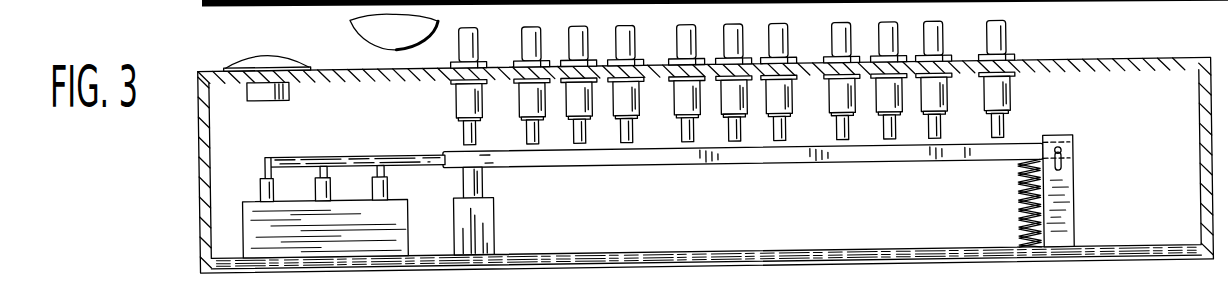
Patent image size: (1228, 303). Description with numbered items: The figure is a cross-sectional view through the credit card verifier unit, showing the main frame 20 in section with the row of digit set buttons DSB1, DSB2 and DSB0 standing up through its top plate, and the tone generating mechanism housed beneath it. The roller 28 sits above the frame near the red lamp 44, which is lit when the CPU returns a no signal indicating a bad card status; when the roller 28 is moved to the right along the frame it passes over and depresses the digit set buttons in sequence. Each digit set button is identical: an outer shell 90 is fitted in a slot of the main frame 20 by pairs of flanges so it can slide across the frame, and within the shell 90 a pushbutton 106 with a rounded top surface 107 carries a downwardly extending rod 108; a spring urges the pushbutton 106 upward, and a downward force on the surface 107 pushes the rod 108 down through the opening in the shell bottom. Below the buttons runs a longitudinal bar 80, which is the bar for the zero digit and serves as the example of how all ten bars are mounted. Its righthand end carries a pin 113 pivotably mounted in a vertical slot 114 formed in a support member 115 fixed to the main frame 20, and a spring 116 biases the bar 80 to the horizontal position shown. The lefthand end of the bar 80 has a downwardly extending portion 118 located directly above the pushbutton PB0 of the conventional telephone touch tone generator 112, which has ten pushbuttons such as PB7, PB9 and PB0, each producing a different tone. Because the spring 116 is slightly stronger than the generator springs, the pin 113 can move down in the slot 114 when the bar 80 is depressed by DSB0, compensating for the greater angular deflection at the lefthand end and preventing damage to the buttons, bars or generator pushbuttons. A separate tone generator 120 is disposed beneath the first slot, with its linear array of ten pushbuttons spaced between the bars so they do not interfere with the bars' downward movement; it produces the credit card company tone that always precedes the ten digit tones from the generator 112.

The main frame 20 is at (410, 64).
The roller 28 is at (368, 40).
The red lamp 44 is at (245, 54).
The actuator bar 80 is at (733, 162).
The outer shell 90 is at (527, 98).
The pushbutton 106 is at (525, 44).
The rounded top surface 107 is at (524, 25).
The rod 108 is at (529, 132).
The telephone touch tone generator 112 is at (375, 220).
The pin 113 is at (1062, 155).
The vertical slot 114 is at (1063, 173).
The support member 115 is at (1070, 231).
The spring 116 is at (1018, 184).
The downwardly extending portion 118 is at (318, 166).
The tone generator 120 is at (489, 214).
The digit set button DSB 0 DSB0 is at (1007, 33).
The digit set button DSB 1 DSB1 is at (521, 76).
The digit set button DSB 2 DSB2 is at (592, 30).
The pushbutton PB 0 PB0 is at (332, 186).
The pushbutton PB 7 PB7 is at (259, 184).
The pushbutton PB 9 PB9 is at (388, 187).